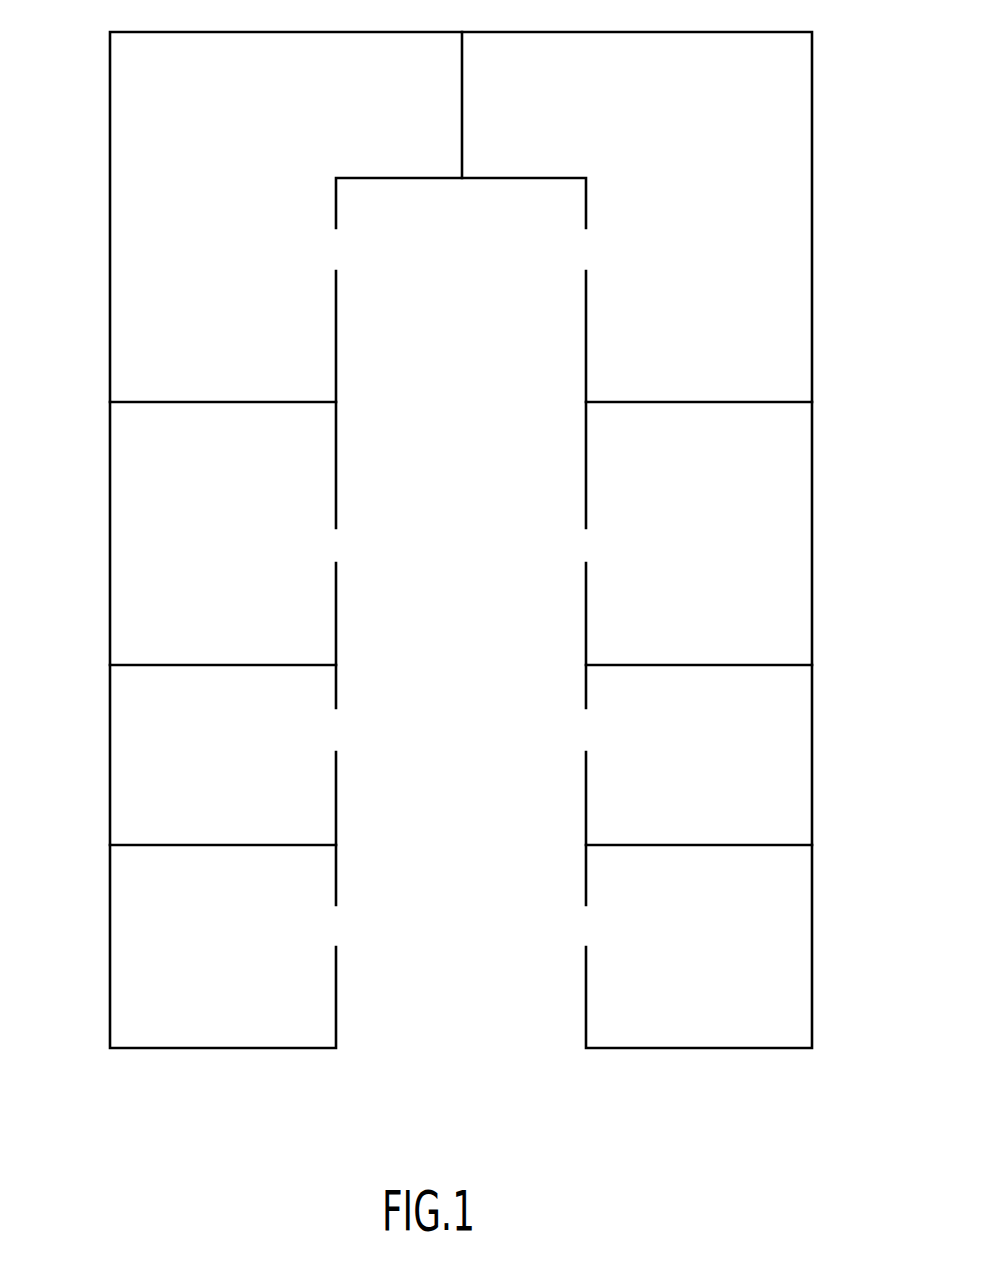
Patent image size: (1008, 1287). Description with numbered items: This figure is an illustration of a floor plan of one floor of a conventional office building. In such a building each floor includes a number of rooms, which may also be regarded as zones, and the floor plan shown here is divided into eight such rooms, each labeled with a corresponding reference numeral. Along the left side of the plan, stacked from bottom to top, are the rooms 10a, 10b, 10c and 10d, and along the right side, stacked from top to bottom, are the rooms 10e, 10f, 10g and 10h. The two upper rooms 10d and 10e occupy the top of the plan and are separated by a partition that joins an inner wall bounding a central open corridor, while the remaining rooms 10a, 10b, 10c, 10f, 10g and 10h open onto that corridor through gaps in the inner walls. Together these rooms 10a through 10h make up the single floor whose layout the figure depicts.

The room 10a is at (137, 948).
The room 10b is at (133, 755).
The room 10c is at (135, 532).
The room 10d is at (128, 192).
The room 10e is at (797, 208).
The room 10f is at (787, 532).
The room 10g is at (792, 760).
The room 10h is at (795, 934).